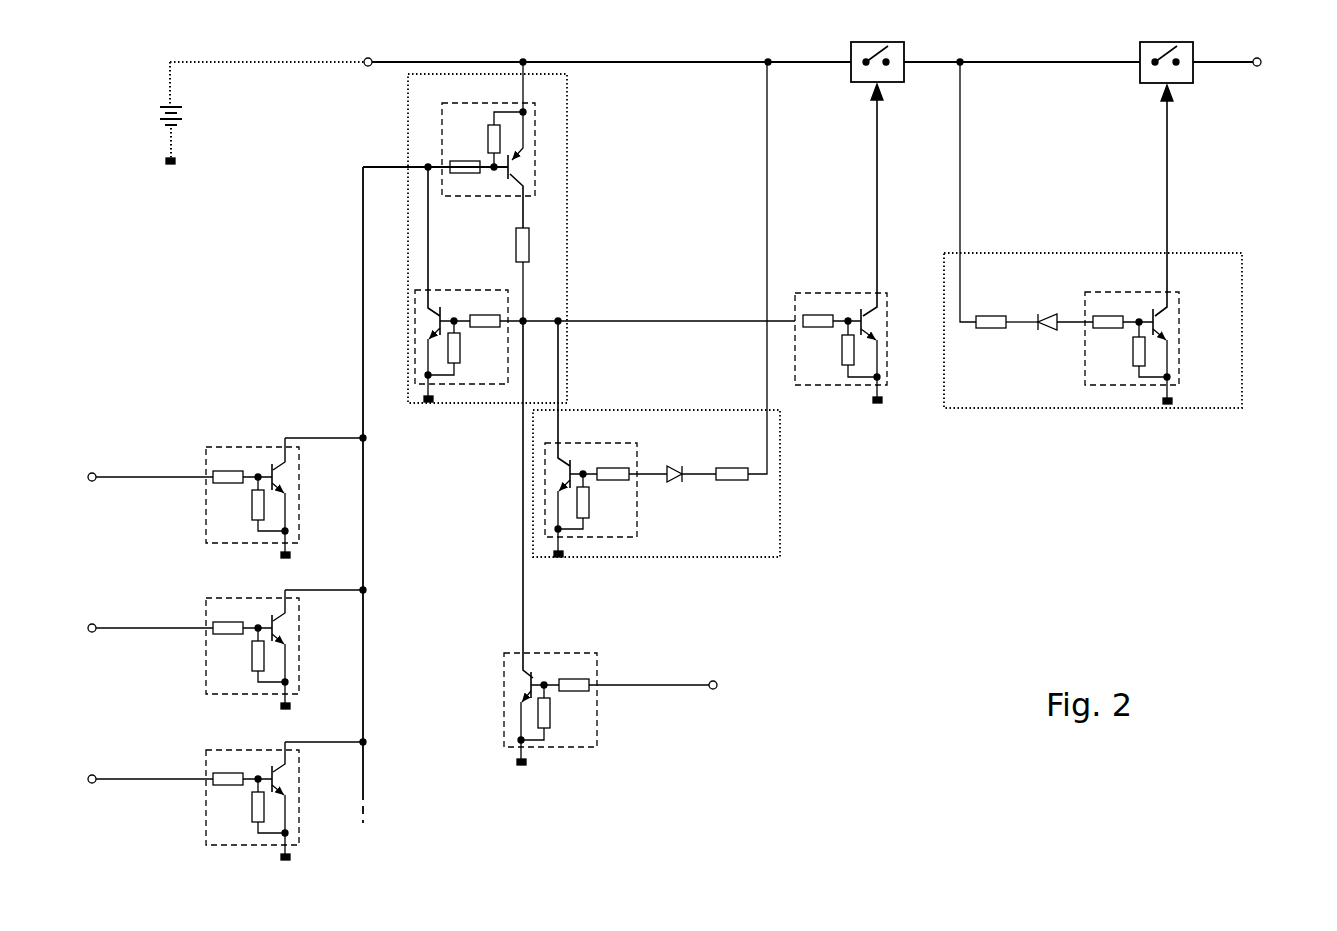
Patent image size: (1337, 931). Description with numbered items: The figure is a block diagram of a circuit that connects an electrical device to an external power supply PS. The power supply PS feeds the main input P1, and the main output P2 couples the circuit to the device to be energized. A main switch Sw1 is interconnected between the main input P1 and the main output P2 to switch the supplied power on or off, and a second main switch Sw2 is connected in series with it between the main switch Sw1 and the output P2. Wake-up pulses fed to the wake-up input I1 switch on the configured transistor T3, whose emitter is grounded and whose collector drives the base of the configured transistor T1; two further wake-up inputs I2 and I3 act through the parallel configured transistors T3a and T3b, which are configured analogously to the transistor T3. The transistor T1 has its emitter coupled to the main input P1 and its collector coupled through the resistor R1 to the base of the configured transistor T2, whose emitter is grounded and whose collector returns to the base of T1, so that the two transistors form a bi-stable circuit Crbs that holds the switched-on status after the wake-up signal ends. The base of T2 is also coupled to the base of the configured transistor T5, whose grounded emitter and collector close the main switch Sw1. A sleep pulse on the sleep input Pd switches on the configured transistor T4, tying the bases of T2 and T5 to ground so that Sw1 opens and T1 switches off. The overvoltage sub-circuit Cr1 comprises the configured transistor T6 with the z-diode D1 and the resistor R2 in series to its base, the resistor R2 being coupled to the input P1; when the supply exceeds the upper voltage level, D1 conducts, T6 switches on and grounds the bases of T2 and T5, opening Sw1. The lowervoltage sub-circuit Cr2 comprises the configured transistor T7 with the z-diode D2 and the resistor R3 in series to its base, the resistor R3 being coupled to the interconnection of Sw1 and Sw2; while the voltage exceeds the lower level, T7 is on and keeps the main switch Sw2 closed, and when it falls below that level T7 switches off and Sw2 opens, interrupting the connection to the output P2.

The main input P1 is at (362, 56).
The main output P2 is at (1263, 56).
The power supply PS is at (186, 128).
The bi-stable circuit Crbs is at (571, 128).
The configured transistor T1 is at (452, 204).
The resistor R1 is at (532, 244).
The configured transistor T2 is at (500, 286).
The configured transistor T3 is at (203, 446).
The configured transistor T3a is at (203, 597).
The configured transistor T3b is at (203, 749).
The wake-up input I1 is at (78, 479).
The wake-up input I2 is at (78, 630).
The wake-up input I3 is at (78, 781).
The configured transistor T4 is at (608, 652).
The sleep input Pd is at (730, 686).
The sub-circuit Cr1 is at (760, 569).
The configured transistor T6 is at (580, 437).
The z-diode D1 is at (676, 457).
The resistor R2 is at (731, 489).
The configured transistor T5 is at (852, 394).
The main switch Sw1 is at (846, 40).
The main switch Sw2 is at (1135, 40).
The sub-circuit Cr2 is at (955, 415).
The resistor R3 is at (993, 310).
The z-diode D2 is at (1050, 336).
The configured transistor T7 is at (1182, 290).